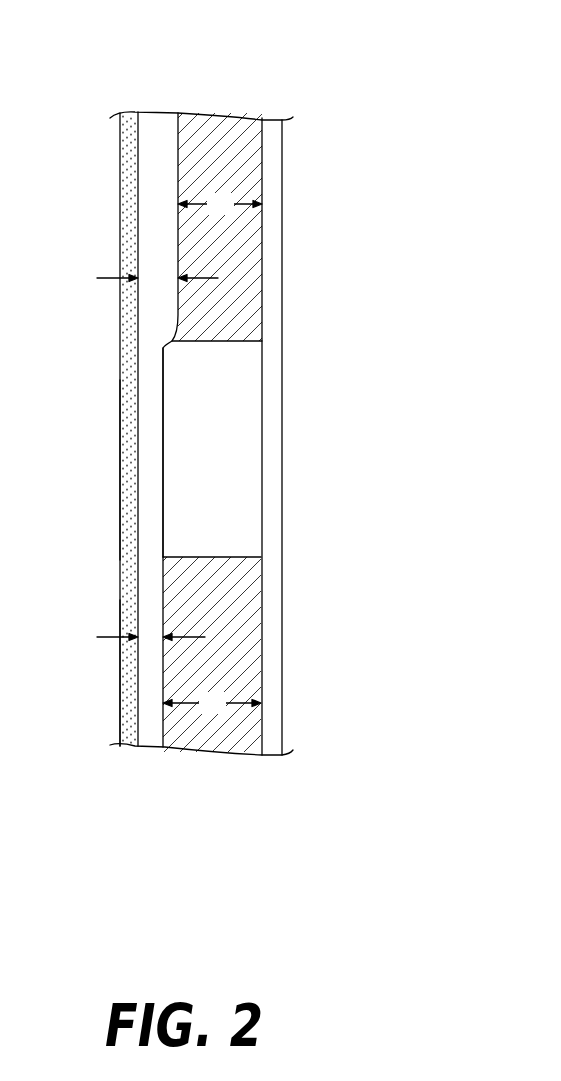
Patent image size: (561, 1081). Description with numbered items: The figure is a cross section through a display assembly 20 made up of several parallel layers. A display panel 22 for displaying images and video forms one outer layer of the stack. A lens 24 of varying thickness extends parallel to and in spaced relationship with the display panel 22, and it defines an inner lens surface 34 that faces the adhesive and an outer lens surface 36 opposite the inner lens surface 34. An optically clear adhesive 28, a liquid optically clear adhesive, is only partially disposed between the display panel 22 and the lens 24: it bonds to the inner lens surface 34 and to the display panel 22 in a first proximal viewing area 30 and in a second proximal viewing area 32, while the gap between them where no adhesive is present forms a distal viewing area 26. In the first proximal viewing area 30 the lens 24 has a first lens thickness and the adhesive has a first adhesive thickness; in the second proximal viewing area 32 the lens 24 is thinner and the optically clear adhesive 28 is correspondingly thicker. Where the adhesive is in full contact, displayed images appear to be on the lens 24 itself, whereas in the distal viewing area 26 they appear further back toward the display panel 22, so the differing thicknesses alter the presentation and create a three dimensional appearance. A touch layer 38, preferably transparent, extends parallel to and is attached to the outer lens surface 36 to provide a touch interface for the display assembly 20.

The display assembly 20 is at (405, 86).
The display panel 22 is at (270, 125).
The lens 24 is at (157, 102).
The distal viewing area 26 is at (118, 450).
The optically clear adhesive 28 is at (200, 130).
The first proximal viewing area 30 is at (118, 211).
The second proximal viewing area 32 is at (118, 668).
The inner lens surface 34 is at (165, 407).
The outer lens surface 36 is at (137, 395).
The touch layer 38 is at (128, 112).